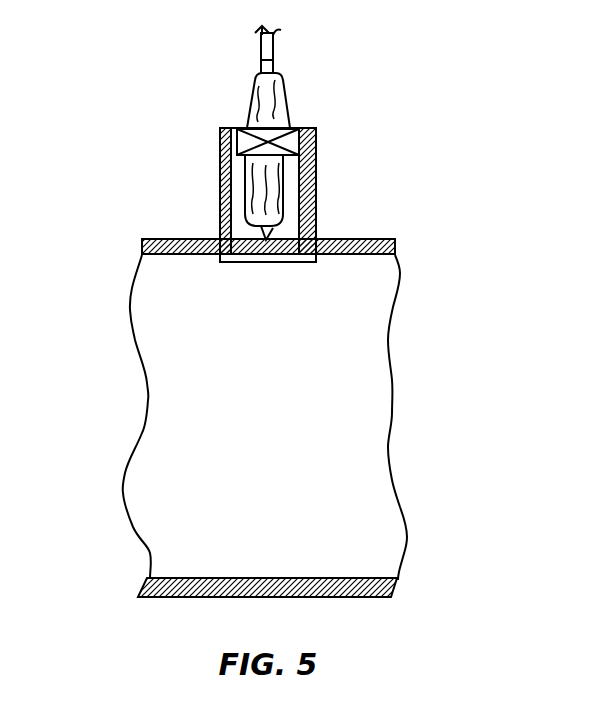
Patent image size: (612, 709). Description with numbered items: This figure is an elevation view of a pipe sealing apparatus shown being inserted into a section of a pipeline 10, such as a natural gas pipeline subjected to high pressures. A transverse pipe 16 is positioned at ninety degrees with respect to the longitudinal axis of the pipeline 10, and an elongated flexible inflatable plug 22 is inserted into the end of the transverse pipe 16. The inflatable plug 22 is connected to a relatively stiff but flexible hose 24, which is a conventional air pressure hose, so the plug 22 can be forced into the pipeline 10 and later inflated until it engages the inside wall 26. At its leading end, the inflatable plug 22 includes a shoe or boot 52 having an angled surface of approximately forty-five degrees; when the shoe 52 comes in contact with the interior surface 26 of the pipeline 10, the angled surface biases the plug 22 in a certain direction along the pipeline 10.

The pipeline 10 is at (375, 239).
The transverse pipe 16 is at (316, 200).
The inflatable plug 22 is at (289, 112).
The hose 24 is at (274, 62).
The inside surface or wall of the pipeline 26 is at (168, 255).
The shoe or boot 52 is at (262, 236).